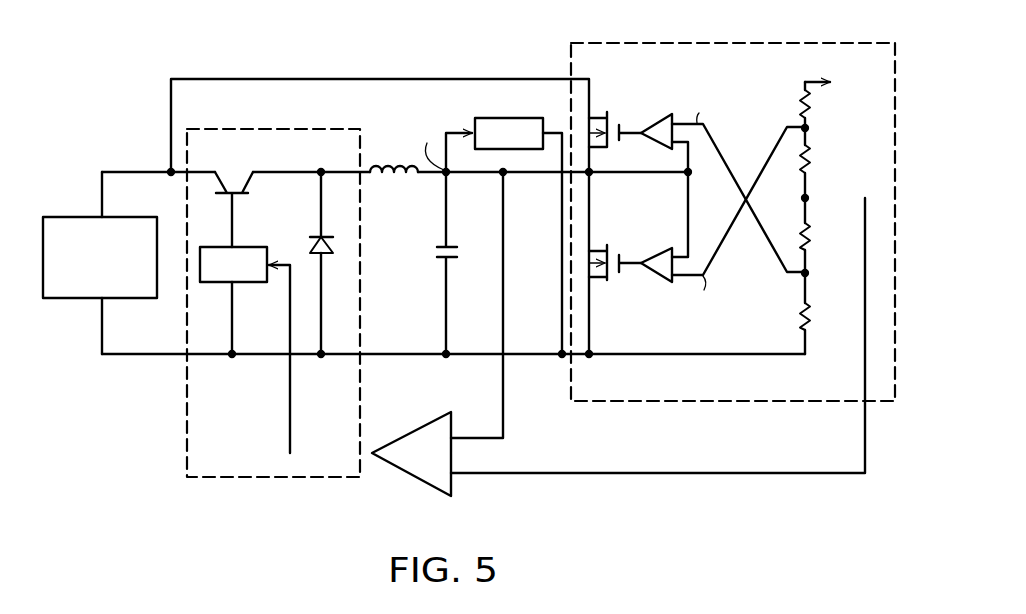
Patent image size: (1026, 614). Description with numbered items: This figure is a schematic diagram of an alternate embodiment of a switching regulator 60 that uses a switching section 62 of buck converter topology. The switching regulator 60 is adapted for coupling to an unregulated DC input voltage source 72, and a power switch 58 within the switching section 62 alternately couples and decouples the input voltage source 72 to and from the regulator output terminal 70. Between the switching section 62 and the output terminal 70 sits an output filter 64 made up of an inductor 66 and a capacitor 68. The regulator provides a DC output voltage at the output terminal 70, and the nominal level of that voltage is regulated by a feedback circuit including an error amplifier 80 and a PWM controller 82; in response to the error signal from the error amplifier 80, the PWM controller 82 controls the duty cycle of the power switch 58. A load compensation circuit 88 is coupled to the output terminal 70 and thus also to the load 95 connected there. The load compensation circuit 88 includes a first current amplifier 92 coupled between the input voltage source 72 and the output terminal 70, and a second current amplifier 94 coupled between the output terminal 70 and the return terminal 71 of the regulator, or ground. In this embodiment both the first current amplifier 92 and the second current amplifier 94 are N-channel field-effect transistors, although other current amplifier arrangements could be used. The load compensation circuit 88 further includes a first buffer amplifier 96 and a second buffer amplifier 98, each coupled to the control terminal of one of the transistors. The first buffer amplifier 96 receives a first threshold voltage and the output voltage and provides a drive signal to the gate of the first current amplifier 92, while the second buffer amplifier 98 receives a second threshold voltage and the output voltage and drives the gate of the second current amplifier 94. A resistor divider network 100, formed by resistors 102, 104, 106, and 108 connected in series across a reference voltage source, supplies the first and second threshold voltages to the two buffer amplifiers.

The power switch 58 is at (226, 186).
The switching regulator 60 is at (377, 64).
The switching section 62 is at (305, 129).
The output filter 64 is at (444, 268).
The inductor 66 is at (406, 166).
The capacitor 68 is at (478, 243).
The output terminal 70 is at (453, 171).
The return terminal 71 is at (449, 352).
The input voltage source 72 is at (80, 216).
The error amplifier 80 is at (433, 420).
The PWM controller 82 is at (247, 247).
The load compensation circuit 88 is at (706, 43).
The first current amplifier 92 is at (592, 117).
The second current amplifier 94 is at (593, 251).
The load 95 is at (505, 118).
The first buffer amplifier 96 is at (652, 124).
The second buffer amplifier 98 is at (661, 283).
The resistor divider network 100 is at (840, 213).
The resistor 102 is at (823, 106).
The resistor 104 is at (823, 159).
The resistor 106 is at (823, 236).
The resistor 108 is at (823, 318).